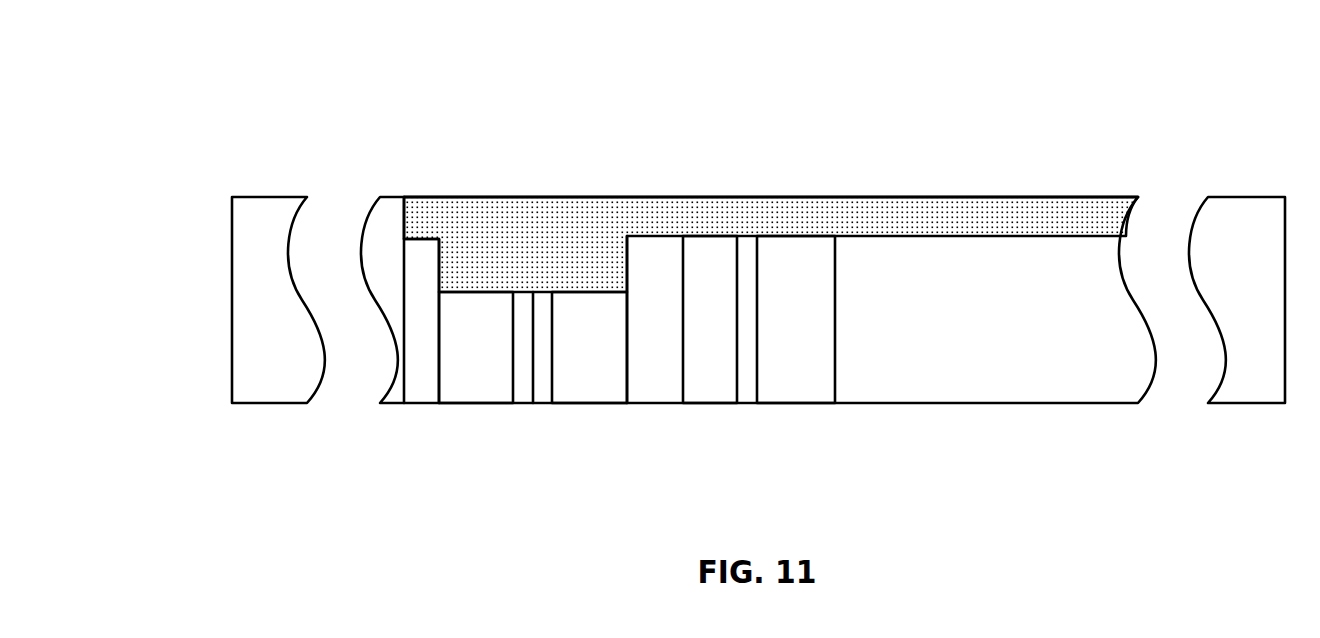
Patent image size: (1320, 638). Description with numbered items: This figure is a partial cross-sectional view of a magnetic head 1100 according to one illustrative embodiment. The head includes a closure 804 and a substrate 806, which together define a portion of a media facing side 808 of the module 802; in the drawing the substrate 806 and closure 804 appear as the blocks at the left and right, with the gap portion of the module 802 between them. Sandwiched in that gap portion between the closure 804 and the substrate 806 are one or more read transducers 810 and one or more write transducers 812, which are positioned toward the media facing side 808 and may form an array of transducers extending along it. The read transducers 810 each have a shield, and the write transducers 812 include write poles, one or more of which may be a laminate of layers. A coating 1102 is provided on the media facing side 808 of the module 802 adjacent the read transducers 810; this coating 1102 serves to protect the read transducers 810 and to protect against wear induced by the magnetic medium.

The magnetic head 1100 is at (696, 254).
The module 802 is at (216, 267).
The closure 804 is at (1243, 220).
The substrate 806 is at (267, 220).
The media facing side 808 is at (475, 197).
The coating 1102 is at (988, 220).
The read transducers 810 is at (533, 392).
The write transducers 812 is at (758, 364).